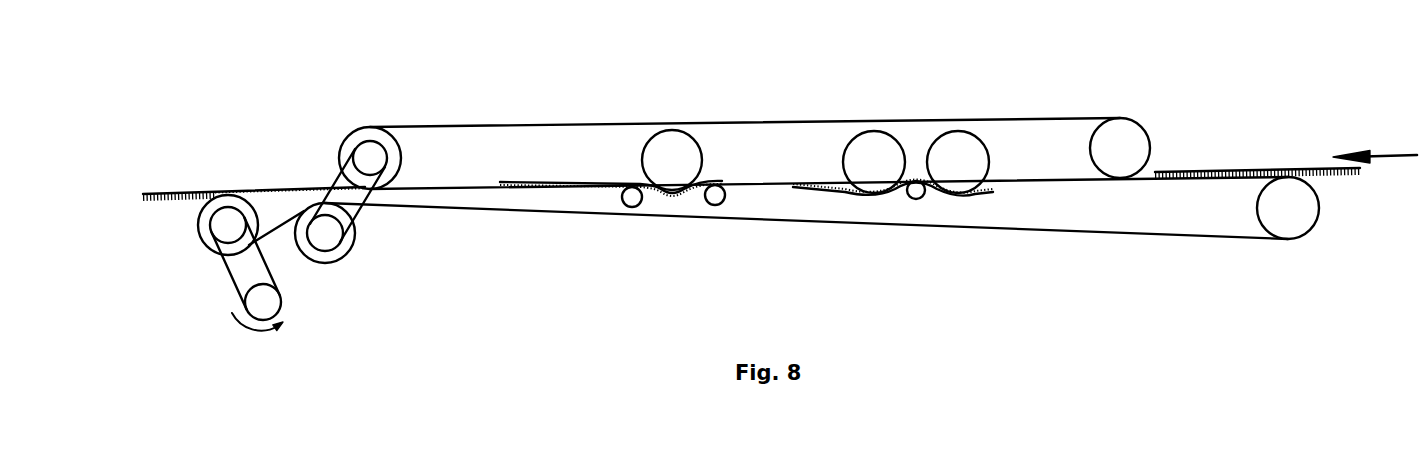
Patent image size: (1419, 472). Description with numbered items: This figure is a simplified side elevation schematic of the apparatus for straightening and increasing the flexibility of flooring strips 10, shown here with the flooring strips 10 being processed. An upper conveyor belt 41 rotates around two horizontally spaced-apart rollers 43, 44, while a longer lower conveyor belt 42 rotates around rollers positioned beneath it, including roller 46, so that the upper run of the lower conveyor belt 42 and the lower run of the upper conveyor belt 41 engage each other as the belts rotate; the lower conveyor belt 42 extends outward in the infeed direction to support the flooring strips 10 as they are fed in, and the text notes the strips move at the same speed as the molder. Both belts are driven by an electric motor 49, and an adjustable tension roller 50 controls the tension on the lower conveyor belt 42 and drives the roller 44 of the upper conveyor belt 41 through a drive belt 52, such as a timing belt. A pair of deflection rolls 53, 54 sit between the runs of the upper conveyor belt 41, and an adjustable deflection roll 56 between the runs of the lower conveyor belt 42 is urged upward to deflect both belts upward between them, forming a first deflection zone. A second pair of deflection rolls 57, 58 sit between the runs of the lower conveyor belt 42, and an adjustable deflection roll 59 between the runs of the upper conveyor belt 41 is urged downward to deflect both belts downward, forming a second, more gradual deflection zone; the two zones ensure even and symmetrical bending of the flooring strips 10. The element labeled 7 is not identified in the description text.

The flooring strips 10 is at (138, 174).
The roller 7 is at (212, 197).
The upper conveyor belt 41 is at (1027, 118).
The lower conveyor belt 42 is at (1243, 238).
The roller 43 is at (1137, 137).
The roller 44 is at (383, 143).
The roller 46 is at (1300, 210).
The electric motor 49 is at (263, 313).
The adjustable tension roller 50 is at (347, 248).
The drive belt 52 is at (333, 182).
The deflection roll 53 is at (953, 140).
The deflection roll 54 is at (873, 143).
The adjustable deflection roll 56 is at (915, 198).
The deflection roll 57 is at (717, 204).
The deflection roll 58 is at (627, 195).
The adjustable deflection roll 59 is at (660, 150).